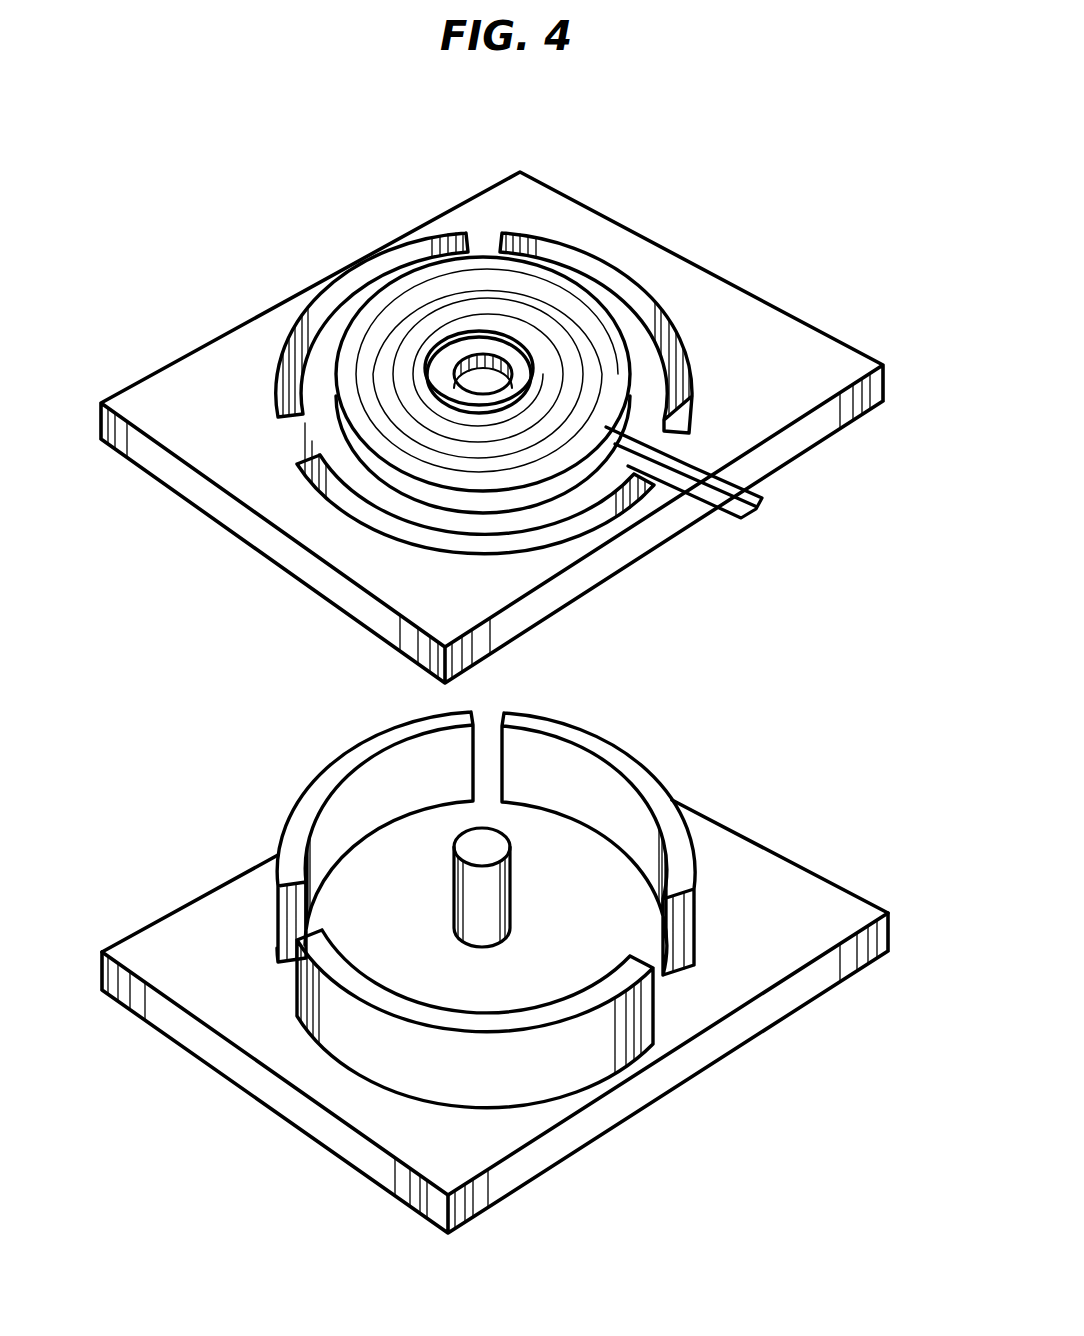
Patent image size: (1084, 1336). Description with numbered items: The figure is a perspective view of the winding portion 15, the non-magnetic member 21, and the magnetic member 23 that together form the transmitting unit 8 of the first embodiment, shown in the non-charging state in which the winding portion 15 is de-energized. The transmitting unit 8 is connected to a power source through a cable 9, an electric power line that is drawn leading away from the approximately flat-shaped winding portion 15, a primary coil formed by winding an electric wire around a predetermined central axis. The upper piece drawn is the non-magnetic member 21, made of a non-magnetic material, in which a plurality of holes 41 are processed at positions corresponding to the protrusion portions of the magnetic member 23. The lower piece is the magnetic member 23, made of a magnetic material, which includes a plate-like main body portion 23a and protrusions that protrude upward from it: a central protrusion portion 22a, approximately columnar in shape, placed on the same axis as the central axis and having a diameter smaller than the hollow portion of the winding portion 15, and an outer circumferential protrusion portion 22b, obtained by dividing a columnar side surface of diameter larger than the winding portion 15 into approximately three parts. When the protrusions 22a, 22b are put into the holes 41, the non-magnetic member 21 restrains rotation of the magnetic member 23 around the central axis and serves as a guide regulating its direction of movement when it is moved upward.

The transmitting unit 8 is at (510, 984).
The cable (electric power line) 9 is at (737, 523).
The winding portion (primary coil) 15 is at (567, 288).
The non-magnetic member 21 is at (430, 220).
The central protrusion portion 22a is at (510, 897).
The outer circumferential protrusion portion 22b is at (657, 765).
The magnetic member 23 is at (495, 1000).
The main body portion 23a is at (258, 860).
The holes 41 is at (660, 293).